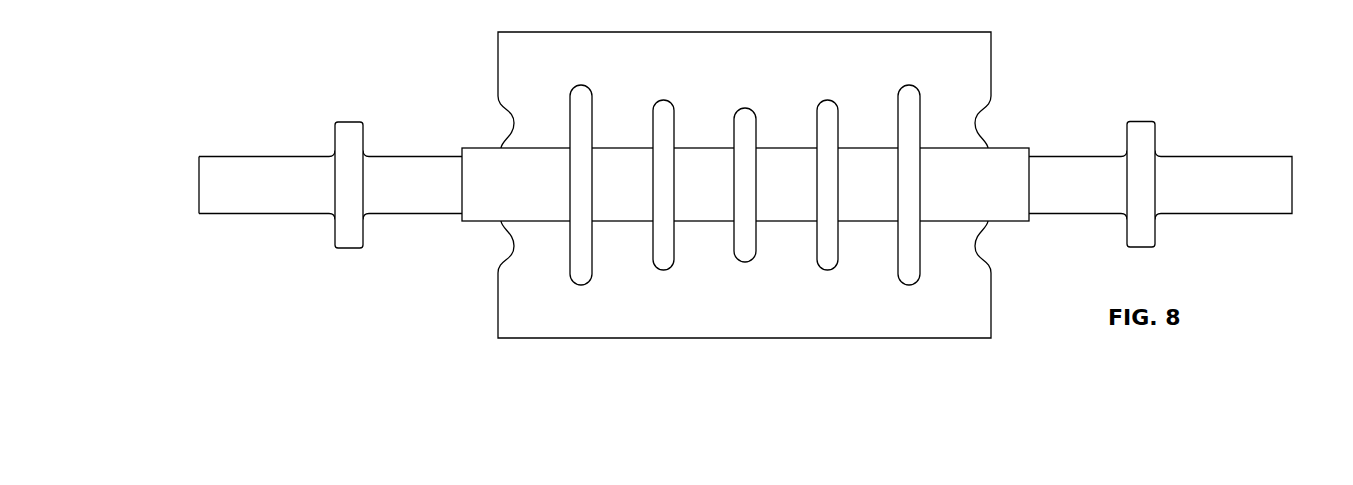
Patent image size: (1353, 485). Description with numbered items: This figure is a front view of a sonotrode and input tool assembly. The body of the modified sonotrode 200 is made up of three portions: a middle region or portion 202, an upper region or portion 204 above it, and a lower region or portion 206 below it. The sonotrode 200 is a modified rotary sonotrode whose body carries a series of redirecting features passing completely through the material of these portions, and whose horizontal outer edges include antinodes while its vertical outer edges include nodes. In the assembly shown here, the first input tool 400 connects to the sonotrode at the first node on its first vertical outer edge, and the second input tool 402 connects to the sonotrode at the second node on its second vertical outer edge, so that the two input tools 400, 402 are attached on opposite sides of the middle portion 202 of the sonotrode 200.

The modified sonotrode 200 is at (585, 372).
The middle region or portion 202 is at (503, 198).
The upper region or portion 204 is at (728, 86).
The lower region or portion 206 is at (728, 302).
The first input tool 400 is at (420, 136).
The second input tool 402 is at (1061, 135).